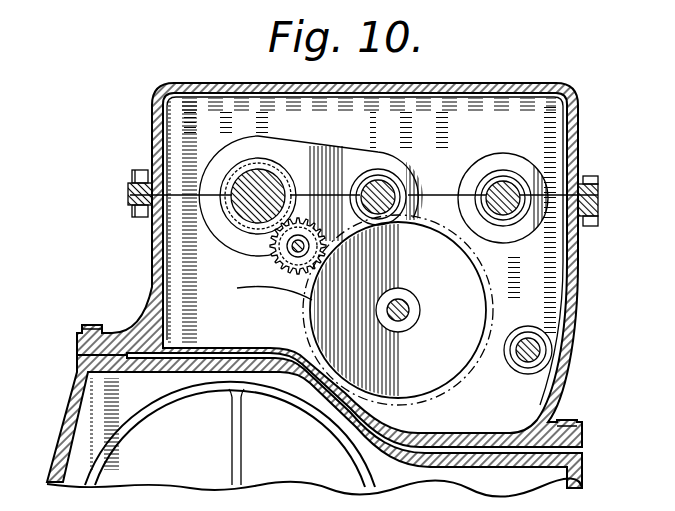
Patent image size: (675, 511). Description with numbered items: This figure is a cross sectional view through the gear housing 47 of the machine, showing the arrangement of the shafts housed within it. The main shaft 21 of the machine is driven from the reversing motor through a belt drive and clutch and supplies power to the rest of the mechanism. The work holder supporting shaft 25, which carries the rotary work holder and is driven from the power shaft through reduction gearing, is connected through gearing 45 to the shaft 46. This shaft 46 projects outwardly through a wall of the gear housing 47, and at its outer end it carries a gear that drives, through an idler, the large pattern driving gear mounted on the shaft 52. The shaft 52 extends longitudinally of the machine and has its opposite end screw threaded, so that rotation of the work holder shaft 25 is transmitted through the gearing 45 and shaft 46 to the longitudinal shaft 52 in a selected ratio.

The main shaft 21 is at (503, 183).
The work holder supporting shaft 25 is at (273, 190).
The gearing 45 is at (250, 237).
The shaft 46 is at (397, 307).
The gear housing 47 is at (576, 292).
The shaft 52 is at (553, 346).